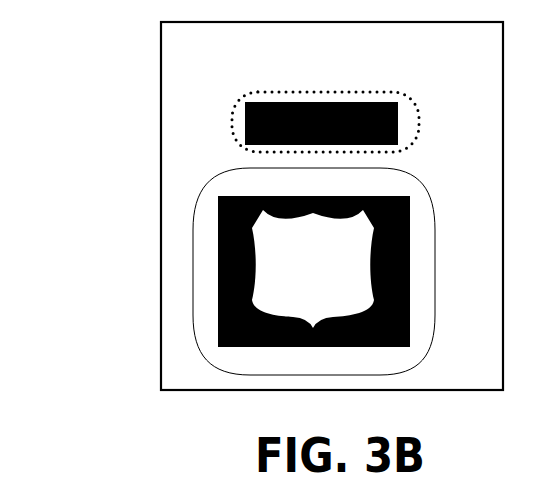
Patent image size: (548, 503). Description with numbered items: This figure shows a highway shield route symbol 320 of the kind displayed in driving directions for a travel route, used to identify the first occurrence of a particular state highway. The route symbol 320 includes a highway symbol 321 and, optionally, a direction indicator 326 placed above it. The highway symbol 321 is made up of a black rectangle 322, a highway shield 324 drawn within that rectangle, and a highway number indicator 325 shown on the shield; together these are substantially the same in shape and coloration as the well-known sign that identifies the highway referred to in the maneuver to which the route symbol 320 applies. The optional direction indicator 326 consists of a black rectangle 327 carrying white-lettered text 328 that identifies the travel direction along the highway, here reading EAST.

The highway shield route symbol 320 is at (98, 197).
The highway symbol 321 is at (224, 184).
The black rectangle 322 is at (410, 202).
The highway shield 324 is at (355, 249).
The highway number indicator 325 is at (336, 279).
The direction indicator 326 is at (232, 119).
The black rectangle 327 is at (402, 119).
The white-lettered text 328 is at (398, 110).